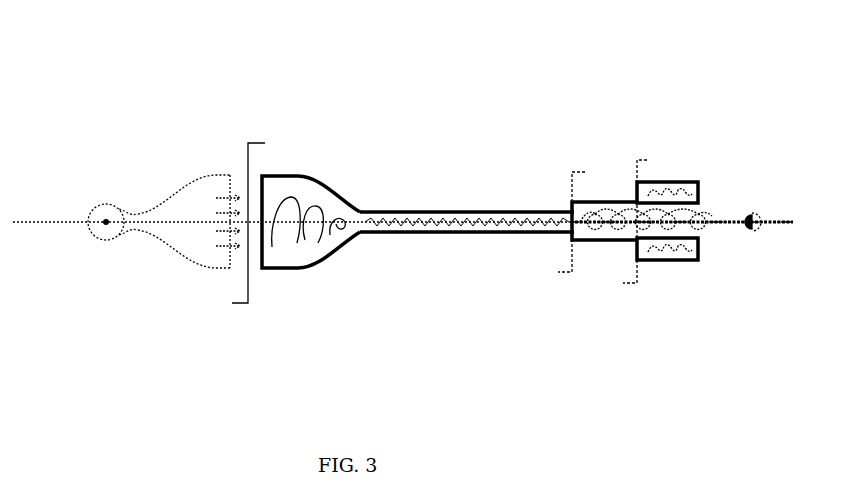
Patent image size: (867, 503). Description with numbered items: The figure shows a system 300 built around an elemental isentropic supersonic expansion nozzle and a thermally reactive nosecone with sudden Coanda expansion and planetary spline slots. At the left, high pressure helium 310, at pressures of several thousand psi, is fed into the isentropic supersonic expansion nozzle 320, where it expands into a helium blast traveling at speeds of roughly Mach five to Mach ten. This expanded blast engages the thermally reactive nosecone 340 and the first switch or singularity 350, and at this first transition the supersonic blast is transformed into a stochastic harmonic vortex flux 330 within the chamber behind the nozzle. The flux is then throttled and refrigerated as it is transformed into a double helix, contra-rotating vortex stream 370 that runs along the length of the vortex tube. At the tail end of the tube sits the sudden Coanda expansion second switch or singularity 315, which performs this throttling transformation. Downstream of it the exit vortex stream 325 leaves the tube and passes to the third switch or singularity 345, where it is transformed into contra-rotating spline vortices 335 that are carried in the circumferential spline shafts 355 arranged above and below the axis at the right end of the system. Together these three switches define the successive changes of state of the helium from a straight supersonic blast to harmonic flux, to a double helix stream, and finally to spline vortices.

The system 300 is at (648, 76).
The high pressure helium 310 is at (106, 223).
The isentropic supersonic expansion nozzle 320 is at (192, 263).
The first switch or singularity 350 is at (268, 152).
The stochastic harmonic vortex flux 330 is at (303, 245).
The thermally reactive nosecone 340 is at (337, 243).
The double helix contra-rotating vortex stream 370 is at (427, 212).
The sudden Coanda expansion second switch or singularity 315 is at (583, 162).
The exit vortex stream 325 is at (603, 225).
The third switch or singularity 345 is at (658, 153).
The contra-rotating spline vortices 335 is at (697, 193).
The circumferential spline shafts 355 is at (677, 263).